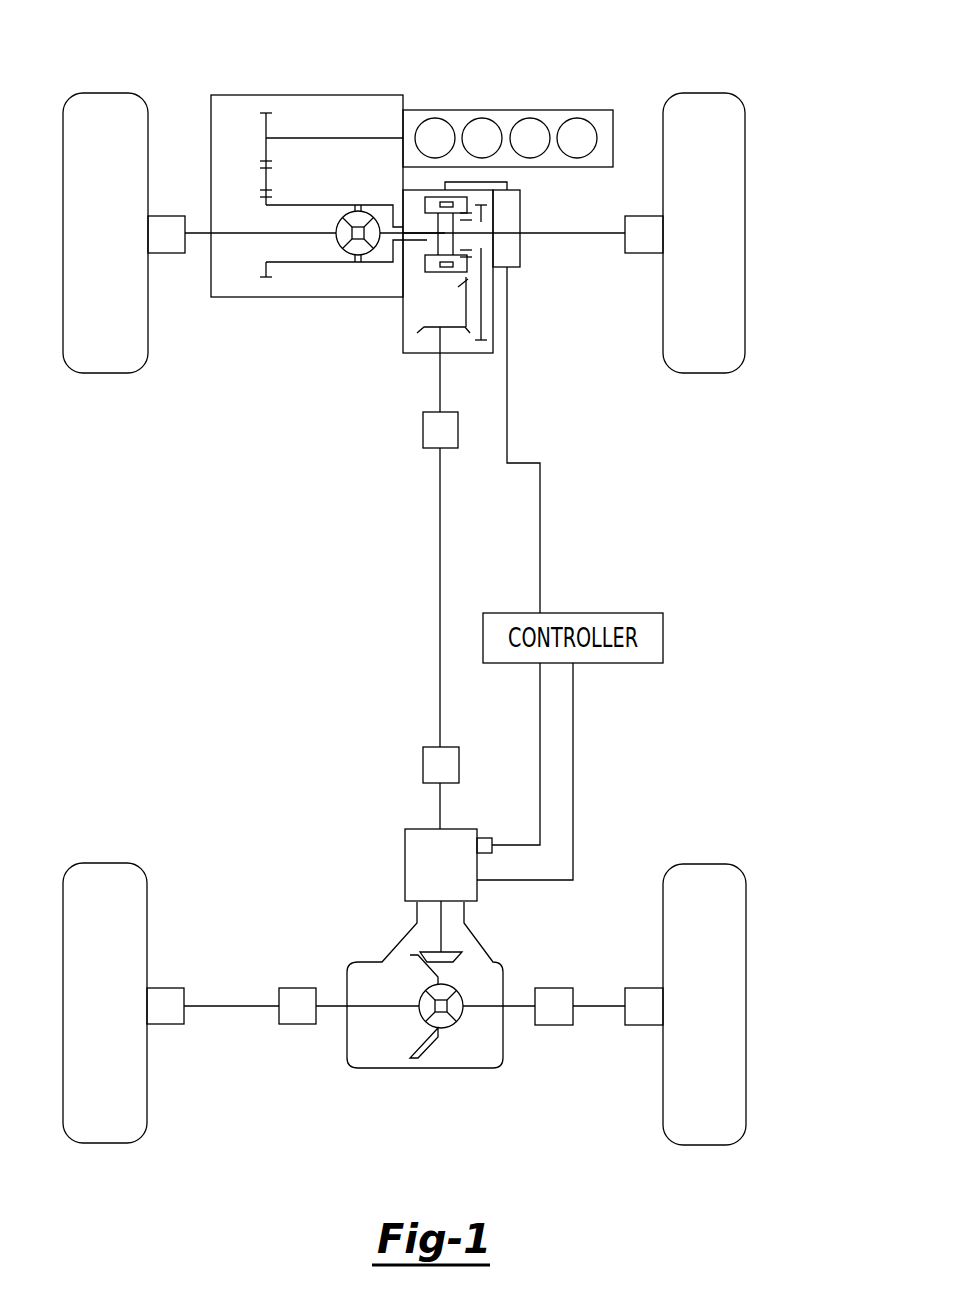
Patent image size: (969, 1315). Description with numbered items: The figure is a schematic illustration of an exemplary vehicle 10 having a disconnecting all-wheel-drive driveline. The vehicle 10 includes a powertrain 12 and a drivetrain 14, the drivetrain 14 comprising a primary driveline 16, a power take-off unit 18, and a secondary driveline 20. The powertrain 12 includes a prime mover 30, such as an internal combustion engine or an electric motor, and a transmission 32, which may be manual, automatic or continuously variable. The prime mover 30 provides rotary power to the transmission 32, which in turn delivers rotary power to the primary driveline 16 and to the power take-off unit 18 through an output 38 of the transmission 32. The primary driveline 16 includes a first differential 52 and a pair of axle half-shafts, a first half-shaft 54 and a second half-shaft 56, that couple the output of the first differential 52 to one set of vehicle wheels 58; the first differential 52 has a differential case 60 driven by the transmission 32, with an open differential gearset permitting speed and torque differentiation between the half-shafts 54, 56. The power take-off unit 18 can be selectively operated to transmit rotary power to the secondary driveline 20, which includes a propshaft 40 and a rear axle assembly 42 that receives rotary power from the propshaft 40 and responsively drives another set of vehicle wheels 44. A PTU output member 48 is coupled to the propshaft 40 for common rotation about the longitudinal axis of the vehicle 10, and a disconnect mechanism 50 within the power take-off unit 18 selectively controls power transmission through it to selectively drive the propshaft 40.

The vehicle 10 is at (753, 595).
The powertrain 12 is at (504, 79).
The drivetrain 14 is at (378, 588).
The primary driveline 16 is at (245, 308).
The power take-off unit 18 is at (345, 346).
The secondary driveline 20 is at (342, 1089).
The prime mover 30 is at (442, 110).
The transmission 32 is at (268, 95).
The output 38 is at (293, 207).
The propshaft 40 is at (440, 697).
The rear axle assembly 42 is at (459, 1074).
The vehicle wheels 44 is at (103, 863).
The PTU output member 48 is at (440, 373).
The disconnect mechanism 50 is at (416, 213).
The first differential 52 is at (345, 262).
The first half-shaft 54 is at (197, 233).
The second half-shaft 56 is at (603, 237).
The vehicle wheels 58 is at (105, 373).
The differential case 60 is at (338, 225).